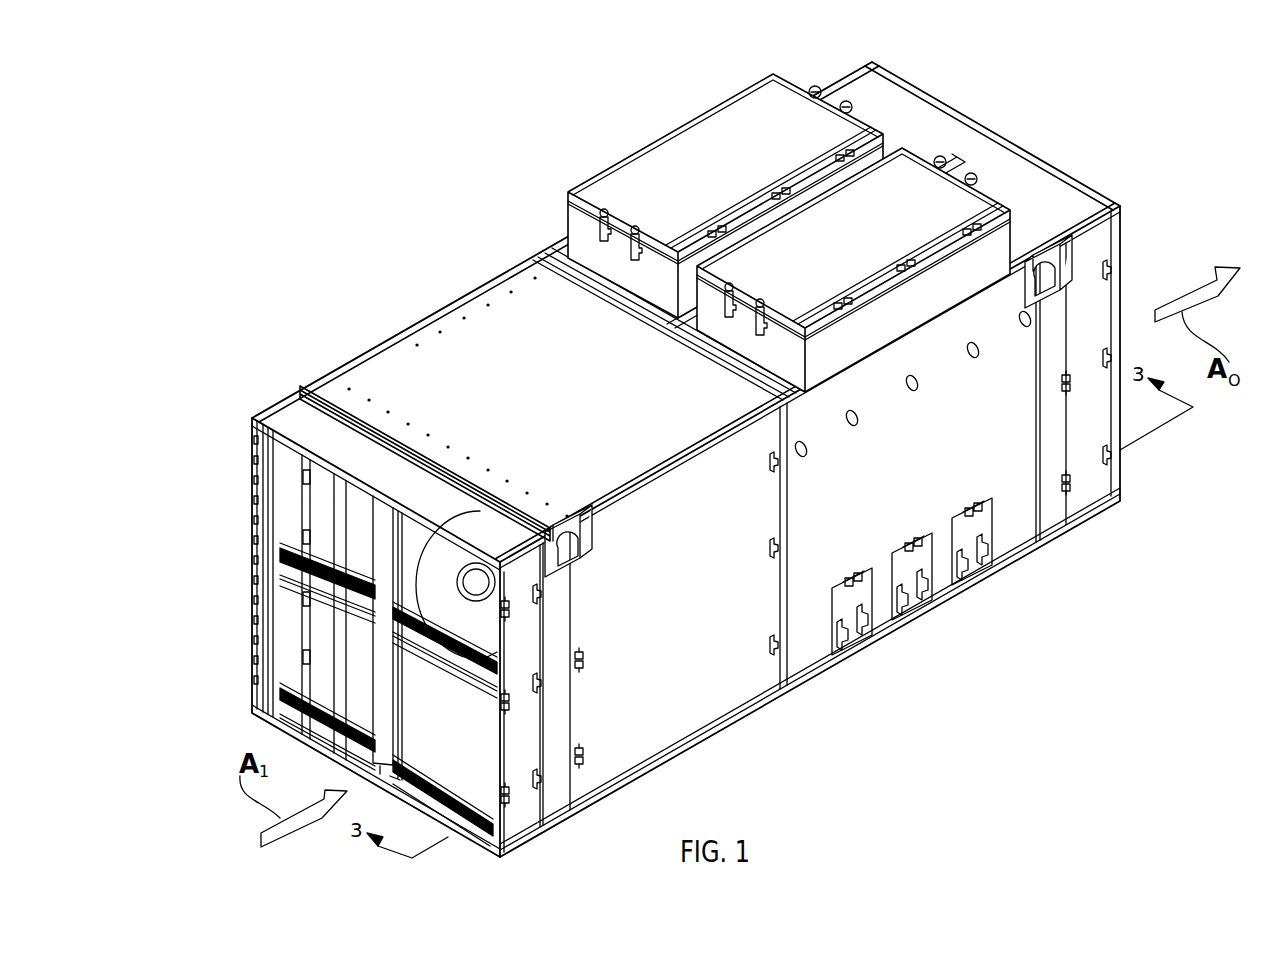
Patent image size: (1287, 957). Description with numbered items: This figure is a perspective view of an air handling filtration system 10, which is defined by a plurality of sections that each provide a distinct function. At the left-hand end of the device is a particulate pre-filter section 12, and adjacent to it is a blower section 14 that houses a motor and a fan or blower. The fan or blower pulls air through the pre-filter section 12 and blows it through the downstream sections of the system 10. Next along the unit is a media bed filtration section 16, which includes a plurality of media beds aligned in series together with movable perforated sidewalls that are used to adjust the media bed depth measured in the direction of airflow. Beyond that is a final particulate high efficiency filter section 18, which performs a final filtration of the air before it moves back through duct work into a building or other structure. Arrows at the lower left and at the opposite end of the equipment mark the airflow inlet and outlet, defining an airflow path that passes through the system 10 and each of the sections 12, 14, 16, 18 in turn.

The air handling filtration system 10 is at (358, 127).
The particulate pre-filter section 12 is at (270, 393).
The blower section 14 is at (418, 302).
The media bed filtration section 16 is at (631, 134).
The final particulate high efficiency filter section 18 is at (1009, 131).